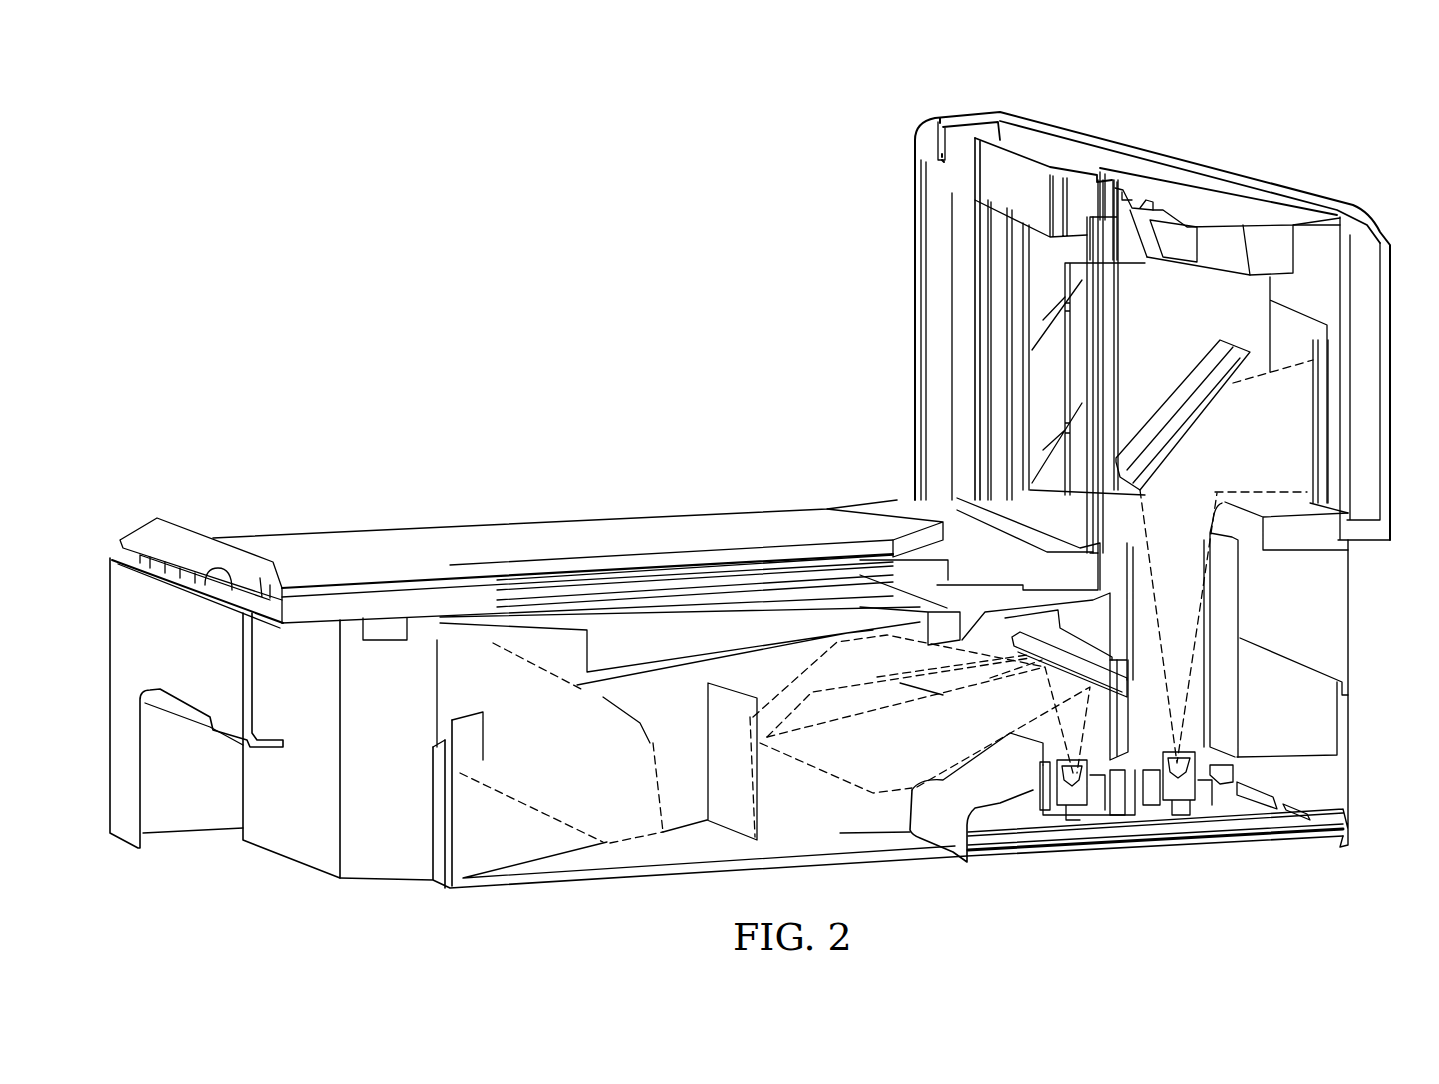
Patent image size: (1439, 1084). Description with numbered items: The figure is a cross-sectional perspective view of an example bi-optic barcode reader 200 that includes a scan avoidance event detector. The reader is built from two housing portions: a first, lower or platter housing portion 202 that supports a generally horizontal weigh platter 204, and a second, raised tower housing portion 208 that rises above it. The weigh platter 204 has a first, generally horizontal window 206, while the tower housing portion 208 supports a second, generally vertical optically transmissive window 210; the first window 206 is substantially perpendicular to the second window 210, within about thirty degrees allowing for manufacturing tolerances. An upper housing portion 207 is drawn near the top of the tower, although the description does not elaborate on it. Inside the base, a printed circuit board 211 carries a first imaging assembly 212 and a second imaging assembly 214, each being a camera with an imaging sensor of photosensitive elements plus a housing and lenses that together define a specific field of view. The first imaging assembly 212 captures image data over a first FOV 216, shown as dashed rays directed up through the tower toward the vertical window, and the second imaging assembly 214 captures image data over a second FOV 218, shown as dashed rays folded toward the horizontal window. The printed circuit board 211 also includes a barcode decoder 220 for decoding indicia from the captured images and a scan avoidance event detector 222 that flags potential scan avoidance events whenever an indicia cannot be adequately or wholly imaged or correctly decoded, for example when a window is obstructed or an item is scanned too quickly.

The bi-optic barcode reader 200 is at (919, 88).
The first housing portion 202 is at (405, 540).
The weigh platter 204 is at (473, 545).
The first window 206 is at (612, 565).
The upper housing portion 207 is at (1190, 205).
The second housing portion 208 is at (938, 163).
The second window 210 is at (1015, 320).
The printed circuit board 211 is at (1317, 833).
The first imaging assembly 212 is at (1183, 815).
The second imaging assembly 214 is at (1075, 815).
The first FOV 216 is at (1182, 596).
The second FOV 218 is at (1067, 727).
The barcode decoder 220 is at (1310, 800).
The scan avoidance event detector 222 is at (1243, 795).